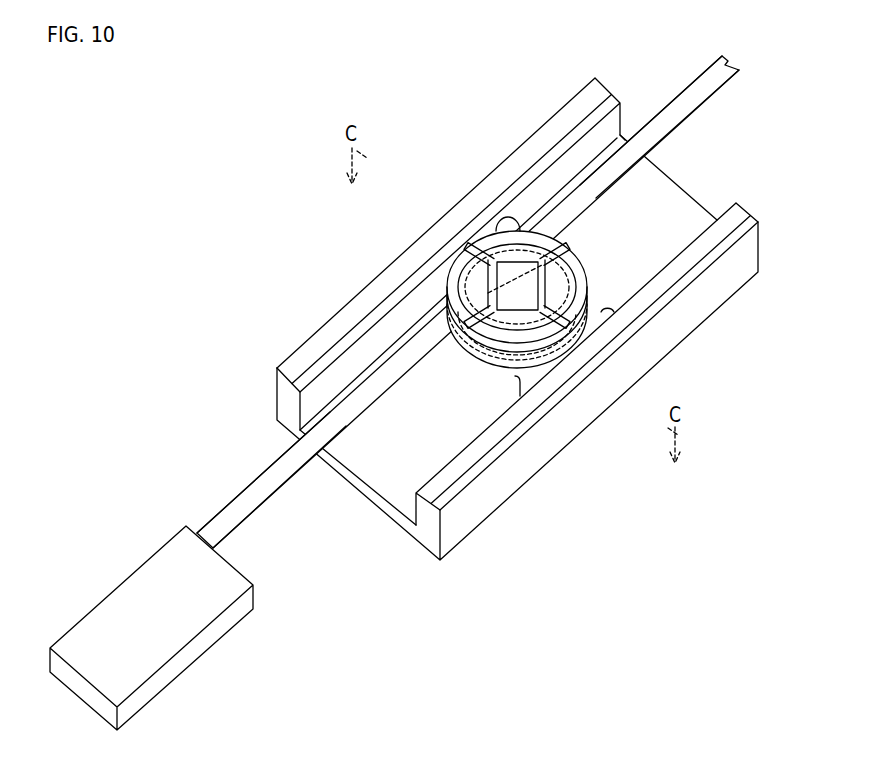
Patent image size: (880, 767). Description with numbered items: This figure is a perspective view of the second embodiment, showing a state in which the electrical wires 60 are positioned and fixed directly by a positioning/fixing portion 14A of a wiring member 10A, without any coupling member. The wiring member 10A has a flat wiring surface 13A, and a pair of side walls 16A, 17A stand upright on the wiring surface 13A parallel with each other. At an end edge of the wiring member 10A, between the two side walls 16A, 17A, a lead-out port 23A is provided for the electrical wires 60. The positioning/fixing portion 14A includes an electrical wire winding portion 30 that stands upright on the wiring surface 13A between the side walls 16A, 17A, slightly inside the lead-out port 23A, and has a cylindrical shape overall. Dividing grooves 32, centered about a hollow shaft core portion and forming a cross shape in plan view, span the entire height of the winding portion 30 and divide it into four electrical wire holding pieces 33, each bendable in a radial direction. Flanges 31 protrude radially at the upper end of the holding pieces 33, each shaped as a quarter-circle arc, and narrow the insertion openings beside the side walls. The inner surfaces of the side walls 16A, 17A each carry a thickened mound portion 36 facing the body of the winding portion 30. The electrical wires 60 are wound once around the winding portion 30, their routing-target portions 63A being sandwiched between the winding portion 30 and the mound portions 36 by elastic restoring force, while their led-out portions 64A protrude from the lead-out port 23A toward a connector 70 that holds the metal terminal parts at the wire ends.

The wiring member 10A is at (760, 248).
The wiring surface 13A is at (673, 217).
The positioning/fixing portion 14A is at (491, 82).
The side wall 16A is at (570, 120).
The side wall 17A is at (745, 220).
The lead-out port 23A is at (301, 403).
The electrical wire winding portion 30 is at (537, 246).
The flange 31 is at (447, 288).
The dividing groove 32 is at (470, 338).
The electrical wire holding piece 33 is at (490, 237).
The mound portion 36 is at (505, 228).
The electrical wire 60 is at (210, 517).
The routing-target portion 63A is at (613, 167).
The led-out portion 64A is at (248, 498).
The connector 70 is at (110, 612).